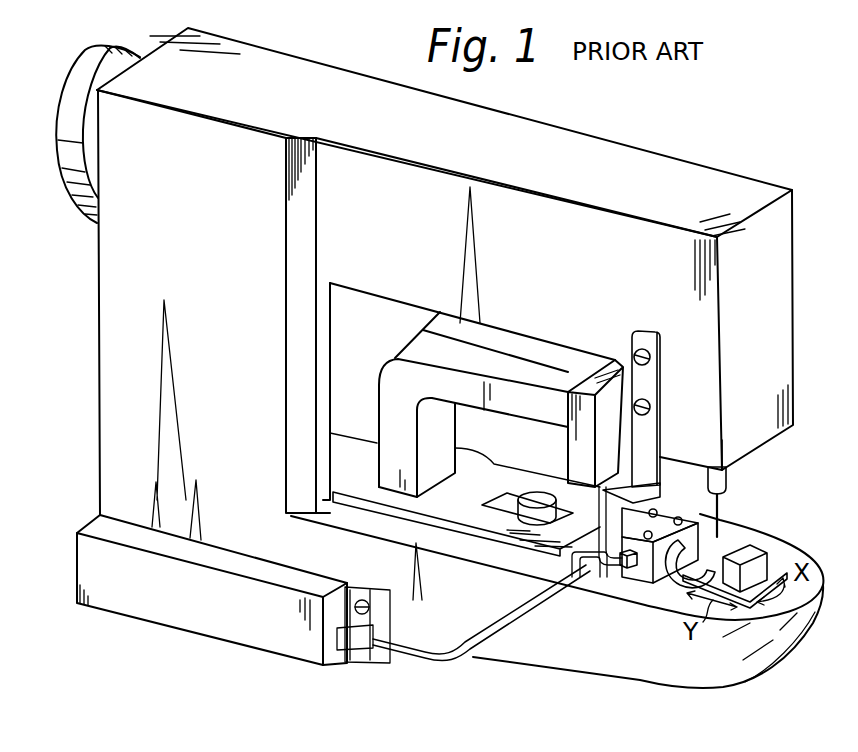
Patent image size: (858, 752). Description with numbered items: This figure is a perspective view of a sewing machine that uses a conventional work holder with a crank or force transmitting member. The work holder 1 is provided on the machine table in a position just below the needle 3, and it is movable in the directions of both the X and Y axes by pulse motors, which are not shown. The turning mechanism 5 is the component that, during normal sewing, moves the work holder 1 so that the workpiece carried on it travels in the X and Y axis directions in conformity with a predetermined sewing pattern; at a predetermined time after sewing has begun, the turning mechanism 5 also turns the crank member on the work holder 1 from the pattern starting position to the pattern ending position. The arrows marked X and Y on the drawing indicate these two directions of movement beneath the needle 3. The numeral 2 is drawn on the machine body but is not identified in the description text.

The work holder 1 is at (760, 543).
The sewing machine 2 is at (578, 140).
The needle 3 is at (720, 505).
The turning mechanism 5 is at (225, 633).